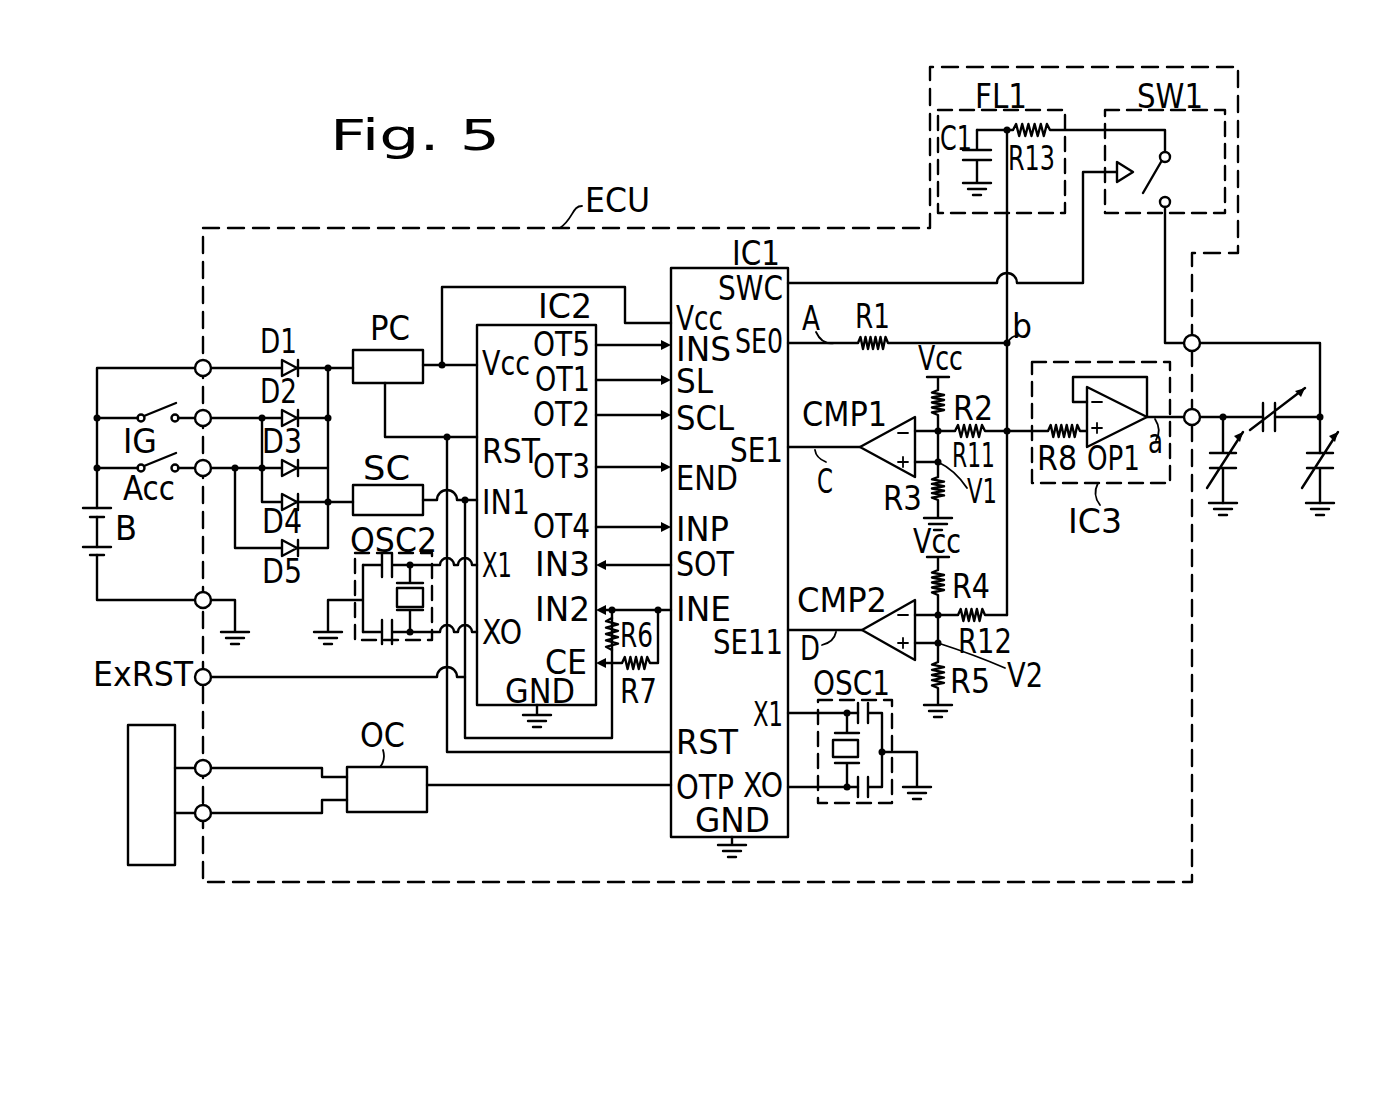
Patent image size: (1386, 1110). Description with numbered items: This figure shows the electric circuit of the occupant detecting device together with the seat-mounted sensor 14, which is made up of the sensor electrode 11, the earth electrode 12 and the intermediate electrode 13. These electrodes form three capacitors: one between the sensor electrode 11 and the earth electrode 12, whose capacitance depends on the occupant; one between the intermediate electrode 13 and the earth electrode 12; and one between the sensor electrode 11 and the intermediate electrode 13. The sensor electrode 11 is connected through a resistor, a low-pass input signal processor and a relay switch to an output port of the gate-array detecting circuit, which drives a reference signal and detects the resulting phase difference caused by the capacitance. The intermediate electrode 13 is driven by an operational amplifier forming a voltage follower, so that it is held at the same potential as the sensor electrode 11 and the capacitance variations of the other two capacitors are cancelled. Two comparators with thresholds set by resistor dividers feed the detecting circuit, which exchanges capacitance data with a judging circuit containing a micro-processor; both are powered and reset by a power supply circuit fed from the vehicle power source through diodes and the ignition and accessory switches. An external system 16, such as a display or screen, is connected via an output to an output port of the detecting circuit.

The sensor electrode 11 is at (1332, 420).
The earth electrode 12 is at (1294, 516).
The intermediate electrode 13 is at (1248, 413).
The sensor 14 is at (1289, 482).
The external system 16 is at (148, 725).